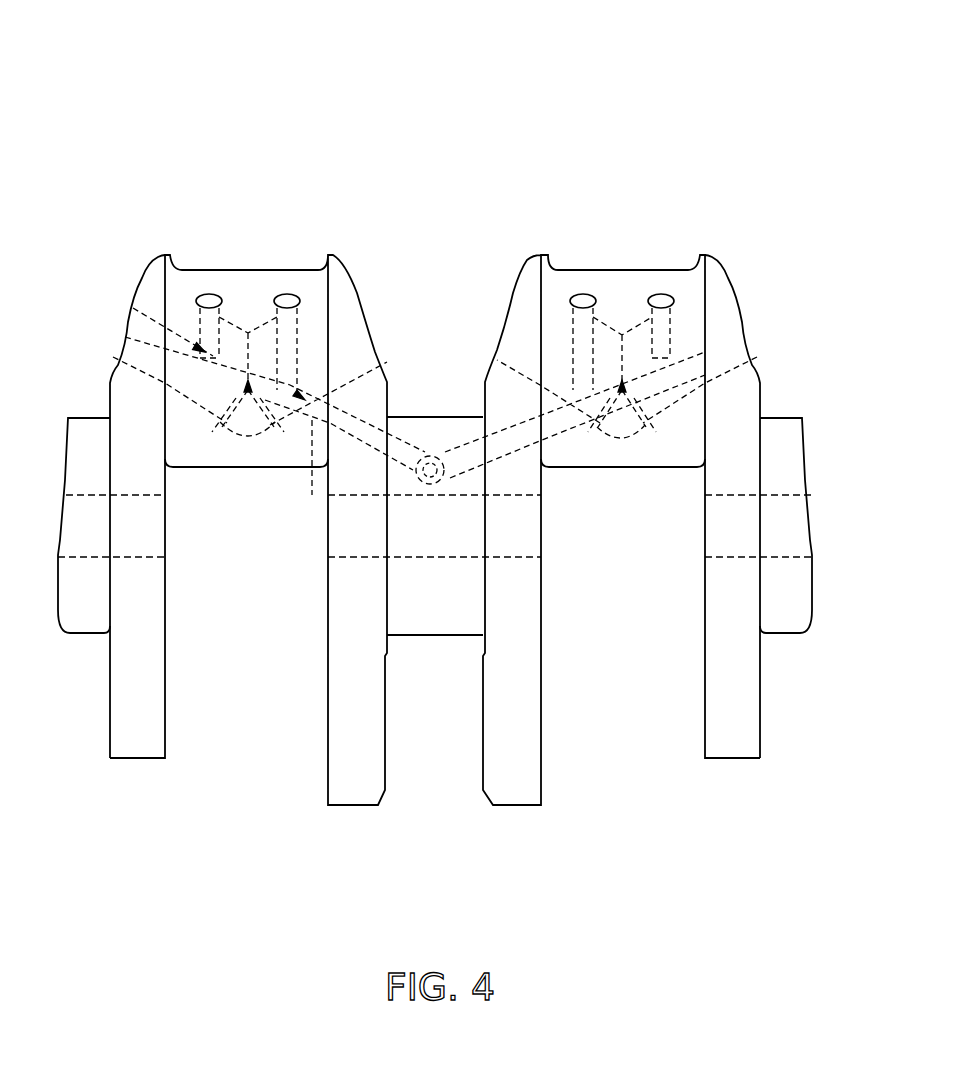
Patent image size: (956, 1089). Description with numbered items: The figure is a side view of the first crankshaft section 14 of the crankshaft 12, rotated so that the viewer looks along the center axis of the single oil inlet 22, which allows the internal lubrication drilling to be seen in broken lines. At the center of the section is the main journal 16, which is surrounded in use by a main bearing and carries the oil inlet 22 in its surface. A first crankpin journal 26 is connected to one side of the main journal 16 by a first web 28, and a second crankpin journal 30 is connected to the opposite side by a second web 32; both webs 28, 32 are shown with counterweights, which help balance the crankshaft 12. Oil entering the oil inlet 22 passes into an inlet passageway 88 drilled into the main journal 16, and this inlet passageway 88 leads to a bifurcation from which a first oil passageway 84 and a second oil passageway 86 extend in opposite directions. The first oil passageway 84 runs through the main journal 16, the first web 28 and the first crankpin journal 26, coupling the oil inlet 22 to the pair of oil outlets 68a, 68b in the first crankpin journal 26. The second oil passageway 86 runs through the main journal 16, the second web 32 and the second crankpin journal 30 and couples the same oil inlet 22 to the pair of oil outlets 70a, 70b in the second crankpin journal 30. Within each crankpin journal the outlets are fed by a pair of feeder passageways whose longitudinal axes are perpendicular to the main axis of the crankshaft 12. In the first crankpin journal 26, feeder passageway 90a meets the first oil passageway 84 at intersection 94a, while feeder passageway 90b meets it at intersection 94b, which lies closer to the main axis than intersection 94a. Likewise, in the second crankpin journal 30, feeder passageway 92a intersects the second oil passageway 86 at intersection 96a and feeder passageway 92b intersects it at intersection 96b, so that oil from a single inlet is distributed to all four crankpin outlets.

The crankshaft 12 is at (788, 402).
The first crankshaft section 14 is at (716, 80).
The main journal 16 is at (433, 636).
The oil inlet 22 is at (428, 457).
The first crankpin journal 26 is at (647, 270).
The first web 28 is at (510, 327).
The second crankpin journal 30 is at (232, 469).
The second web 32 is at (357, 300).
The oil outlet 68a is at (665, 278).
The oil outlet 68b is at (579, 278).
The oil outlet 70a is at (290, 278).
The oil outlet 70b is at (205, 278).
The first oil passageway 84 is at (553, 425).
The second oil passageway 86 is at (312, 480).
The inlet passageway 88 is at (438, 455).
The feeder passageway 90a is at (661, 358).
The feeder passageway 90b is at (573, 327).
The feeder passageway 92a is at (248, 333).
The feeder passageway 92b is at (200, 323).
The intersection 94a is at (670, 350).
The intersection 94b is at (567, 396).
The intersection 96a is at (297, 401).
The intersection 96b is at (133, 308).